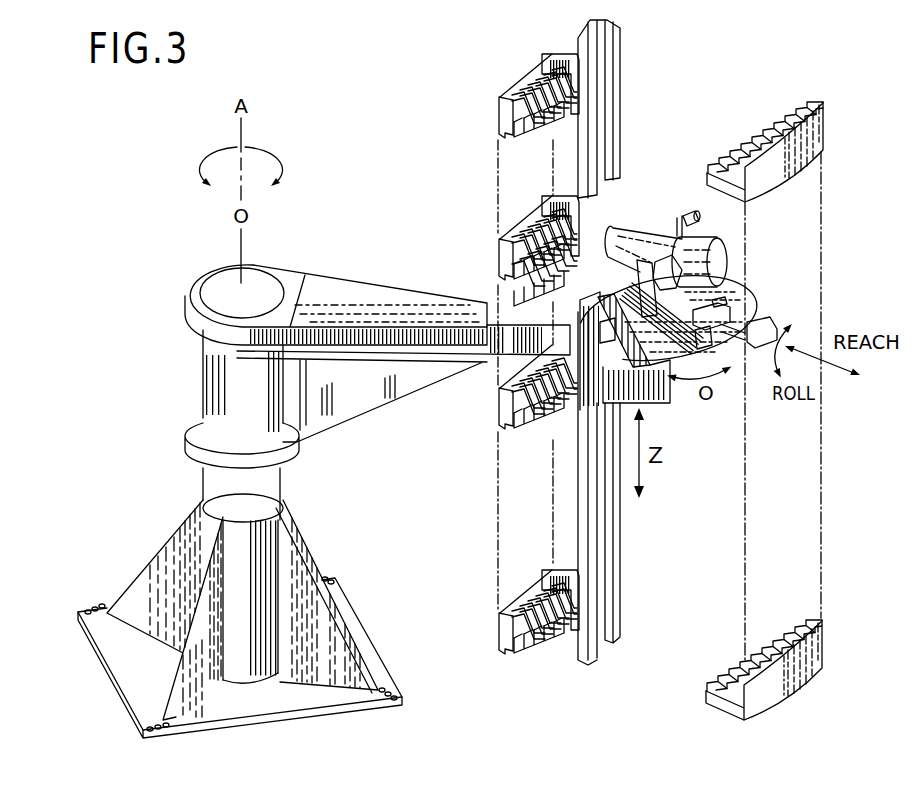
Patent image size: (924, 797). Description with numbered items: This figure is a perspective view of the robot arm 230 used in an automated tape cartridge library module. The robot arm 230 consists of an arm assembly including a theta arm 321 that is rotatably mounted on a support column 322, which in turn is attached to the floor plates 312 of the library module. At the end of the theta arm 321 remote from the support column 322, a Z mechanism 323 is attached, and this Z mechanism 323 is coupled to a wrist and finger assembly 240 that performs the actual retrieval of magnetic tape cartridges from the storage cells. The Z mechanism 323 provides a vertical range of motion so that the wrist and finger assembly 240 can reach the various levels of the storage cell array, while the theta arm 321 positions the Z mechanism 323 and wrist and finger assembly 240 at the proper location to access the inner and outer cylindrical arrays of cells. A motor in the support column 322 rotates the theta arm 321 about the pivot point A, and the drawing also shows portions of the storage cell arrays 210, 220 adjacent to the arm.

The finger calibration fixture 210 is at (528, 76).
The stepped calibration block 220 is at (824, 132).
The robot arm 230 is at (383, 296).
The wrist and finger assembly 240 is at (628, 280).
The floor plates 312 is at (103, 659).
The theta arm 321 is at (400, 338).
The support column 322 is at (282, 486).
The Z mechanism 323 is at (652, 396).